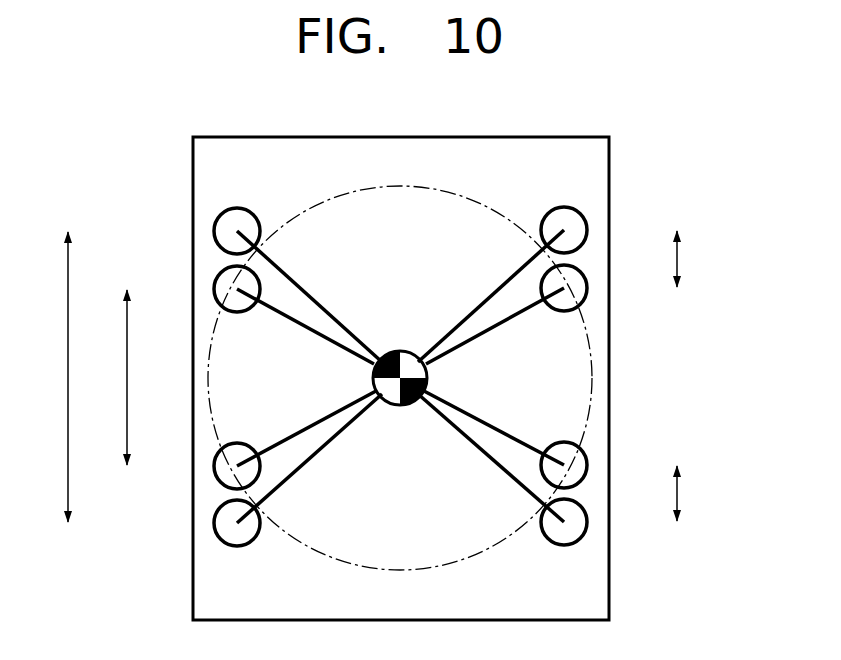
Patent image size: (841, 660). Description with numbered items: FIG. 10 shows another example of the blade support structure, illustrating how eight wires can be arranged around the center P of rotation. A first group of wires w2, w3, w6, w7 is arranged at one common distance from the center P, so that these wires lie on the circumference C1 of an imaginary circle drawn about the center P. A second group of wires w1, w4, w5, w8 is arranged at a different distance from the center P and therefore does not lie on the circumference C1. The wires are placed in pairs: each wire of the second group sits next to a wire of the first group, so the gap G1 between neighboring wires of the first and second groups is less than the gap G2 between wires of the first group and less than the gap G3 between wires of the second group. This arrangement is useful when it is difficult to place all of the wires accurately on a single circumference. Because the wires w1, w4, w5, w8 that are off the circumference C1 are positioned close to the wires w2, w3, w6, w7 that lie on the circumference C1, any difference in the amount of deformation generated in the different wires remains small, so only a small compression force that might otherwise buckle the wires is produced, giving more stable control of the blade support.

The center of rotation P is at (406, 351).
The circumference C1 is at (492, 213).
The wire w1 is at (680, 230).
The wire w2 is at (680, 288).
The wire w3 is at (680, 465).
The wire w4 is at (680, 522).
The wire w5 is at (62, 231).
The wire w6 is at (214, 289).
The wire w7 is at (214, 466).
The wire w8 is at (62, 523).
The gap G1 is at (696, 376).
The gap G2 is at (108, 377).
The gap G3 is at (50, 377).